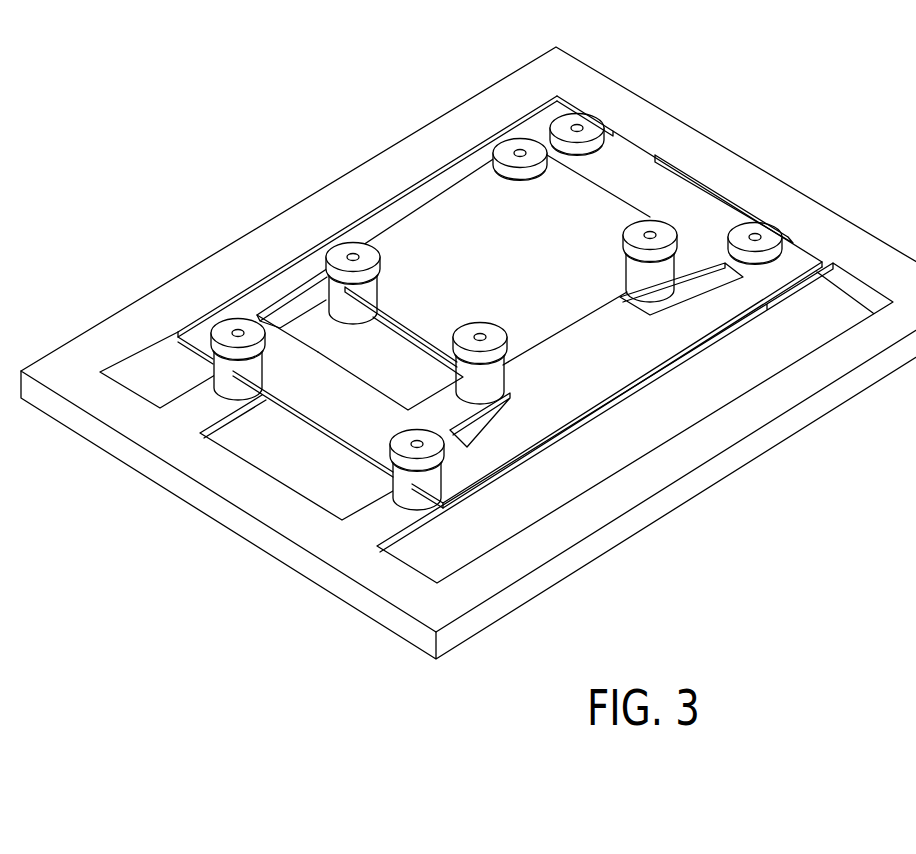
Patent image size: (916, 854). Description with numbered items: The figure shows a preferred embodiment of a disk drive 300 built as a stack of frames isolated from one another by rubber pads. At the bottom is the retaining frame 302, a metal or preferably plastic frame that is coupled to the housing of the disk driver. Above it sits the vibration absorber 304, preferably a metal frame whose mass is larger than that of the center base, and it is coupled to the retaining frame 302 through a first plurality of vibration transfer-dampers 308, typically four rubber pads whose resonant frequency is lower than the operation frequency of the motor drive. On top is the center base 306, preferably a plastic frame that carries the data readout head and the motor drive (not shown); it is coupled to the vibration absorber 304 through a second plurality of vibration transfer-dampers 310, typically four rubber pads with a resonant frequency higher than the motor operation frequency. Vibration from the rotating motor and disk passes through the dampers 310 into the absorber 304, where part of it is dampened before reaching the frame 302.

The disk drive 300 is at (318, 157).
The retaining frame 302 is at (388, 615).
The vibration absorber 304 is at (327, 402).
The center base 306 is at (412, 232).
The first plurality of vibration transfer-dampers 308 is at (588, 124).
The second plurality of vibration transfer-dampers 310 is at (520, 150).